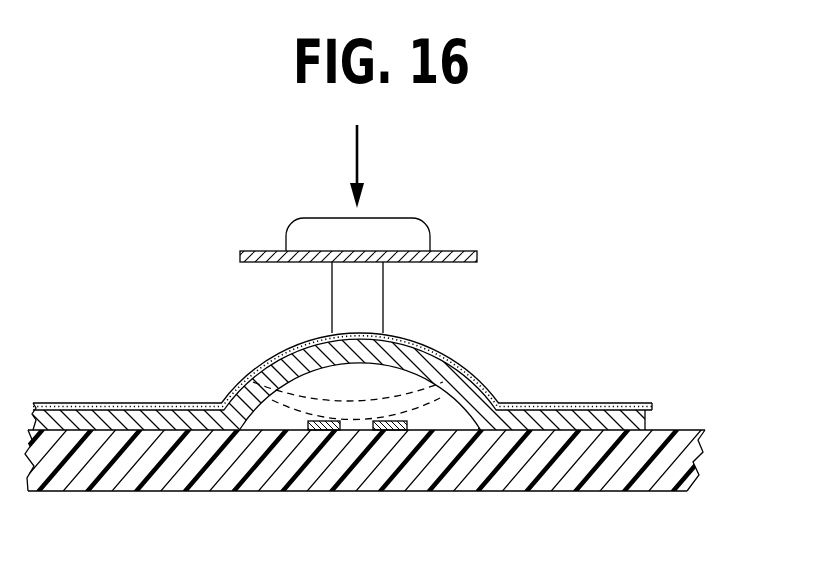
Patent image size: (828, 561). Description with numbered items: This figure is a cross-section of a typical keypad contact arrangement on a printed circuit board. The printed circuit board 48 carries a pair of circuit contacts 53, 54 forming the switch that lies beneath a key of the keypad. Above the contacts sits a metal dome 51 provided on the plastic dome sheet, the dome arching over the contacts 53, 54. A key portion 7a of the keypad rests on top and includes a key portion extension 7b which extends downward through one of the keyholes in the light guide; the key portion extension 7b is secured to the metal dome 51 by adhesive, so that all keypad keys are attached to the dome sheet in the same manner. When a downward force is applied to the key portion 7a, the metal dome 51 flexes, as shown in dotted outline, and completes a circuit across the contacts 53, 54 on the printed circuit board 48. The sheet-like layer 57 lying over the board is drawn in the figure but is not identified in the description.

The key portion 7a is at (400, 228).
The key portion extension 7b is at (331, 333).
The printed circuit board 48 is at (663, 493).
The metal dome 51 is at (441, 352).
The circuit contact 53 is at (300, 430).
The circuit contact 54 is at (414, 430).
The cover sheet 57 is at (100, 403).